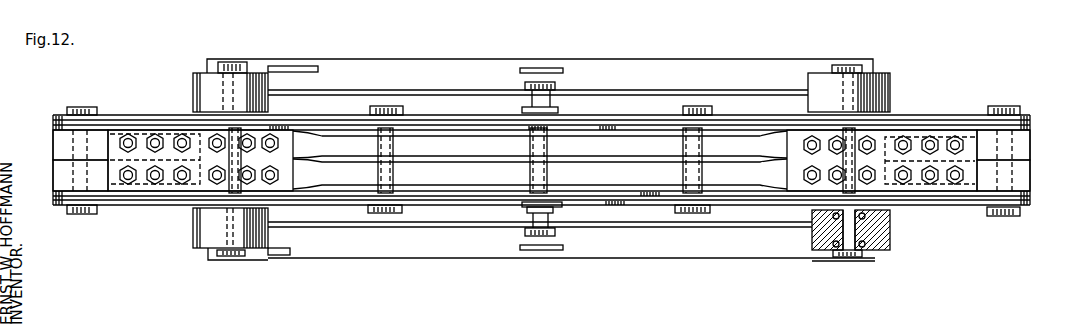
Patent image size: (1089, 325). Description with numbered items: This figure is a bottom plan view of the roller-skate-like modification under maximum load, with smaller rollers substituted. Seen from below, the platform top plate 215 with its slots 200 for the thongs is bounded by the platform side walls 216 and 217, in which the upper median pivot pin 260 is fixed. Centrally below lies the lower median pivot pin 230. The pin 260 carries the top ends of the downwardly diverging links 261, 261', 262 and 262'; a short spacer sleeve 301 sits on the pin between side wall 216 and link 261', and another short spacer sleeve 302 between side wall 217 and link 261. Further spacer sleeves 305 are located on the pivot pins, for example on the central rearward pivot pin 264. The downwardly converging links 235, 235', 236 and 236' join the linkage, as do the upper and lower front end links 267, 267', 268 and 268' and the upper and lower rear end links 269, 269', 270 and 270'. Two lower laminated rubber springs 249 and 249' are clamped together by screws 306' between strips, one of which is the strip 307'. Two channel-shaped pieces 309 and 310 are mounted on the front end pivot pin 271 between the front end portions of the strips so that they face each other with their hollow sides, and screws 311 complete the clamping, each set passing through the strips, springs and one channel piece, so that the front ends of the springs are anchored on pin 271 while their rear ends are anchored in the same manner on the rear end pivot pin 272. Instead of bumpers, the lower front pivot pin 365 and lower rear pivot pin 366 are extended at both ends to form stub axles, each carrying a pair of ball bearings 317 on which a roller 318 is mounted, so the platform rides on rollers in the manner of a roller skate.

The slots 200 is at (306, 70).
The platform top plate 215 is at (414, 60).
The platform side wall 216 is at (716, 259).
The platform side wall 217 is at (674, 90).
The lower median pivot pin 230 is at (527, 232).
The downwardly converging link 235 is at (359, 117).
The downwardly converging link 235' is at (369, 222).
The downwardly converging link 236 is at (566, 103).
The downwardly converging link 236' is at (614, 228).
The lower laminated rubber spring 249 is at (540, 144).
The lower laminated rubber spring 249' is at (540, 174).
The upper median pivot pin 260 is at (540, 251).
The downwardly diverging link 261 is at (295, 117).
The downwardly diverging link 261' is at (540, 229).
The downwardly diverging link 262 is at (625, 103).
The downwardly diverging link 262' is at (659, 223).
The central rearward pivot pin 264 is at (694, 105).
The upper front end link 267 is at (297, 96).
The upper front end link 267' is at (297, 211).
The lower front end link 268 is at (297, 112).
The lower front end link 268' is at (297, 227).
The upper rear end link 269 is at (785, 108).
The upper rear end link 269' is at (785, 211).
The lower rear end link 270 is at (785, 101).
The lower rear end link 270' is at (785, 225).
The front end pivot pin 271 is at (79, 106).
The rear end pivot pin 272 is at (1001, 218).
The short spacer sleeve 301 is at (550, 212).
The short spacer sleeve 302 is at (528, 100).
The spacer sleeve 305 is at (394, 147).
The screw 306' is at (542, 189).
The metal strip 307' is at (538, 192).
The channel-shaped piece 309 is at (62, 172).
The channel-shaped piece 310 is at (58, 145).
The screw 311 is at (128, 136).
The ball bearing 317 is at (868, 251).
The roller 318 is at (888, 79).
The lower front pivot pin 365 is at (232, 258).
The lower rear pivot pin 366 is at (840, 258).